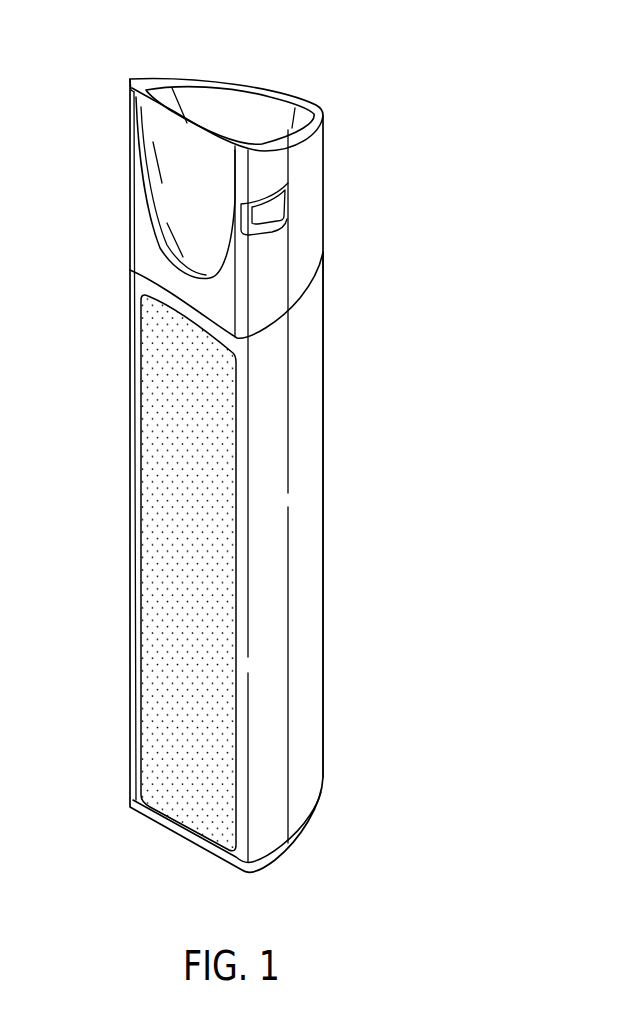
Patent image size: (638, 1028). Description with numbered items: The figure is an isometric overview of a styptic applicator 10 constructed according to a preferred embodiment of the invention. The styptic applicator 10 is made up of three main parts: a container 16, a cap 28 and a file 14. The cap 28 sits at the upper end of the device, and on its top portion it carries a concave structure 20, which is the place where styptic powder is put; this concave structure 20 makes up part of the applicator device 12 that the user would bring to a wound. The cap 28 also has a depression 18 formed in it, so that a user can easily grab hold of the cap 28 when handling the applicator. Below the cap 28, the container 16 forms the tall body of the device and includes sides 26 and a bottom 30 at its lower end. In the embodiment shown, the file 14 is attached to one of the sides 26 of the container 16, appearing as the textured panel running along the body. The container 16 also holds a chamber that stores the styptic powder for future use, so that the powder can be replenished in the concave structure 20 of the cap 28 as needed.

The styptic applicator 10 is at (271, 450).
The applicator device 12 is at (230, 77).
The file 14 is at (153, 484).
The container 16 is at (277, 496).
The depression 18 is at (198, 200).
The concave structure 20 is at (259, 107).
The side 26 is at (323, 662).
The cap 28 is at (337, 200).
The bottom 30 is at (265, 870).